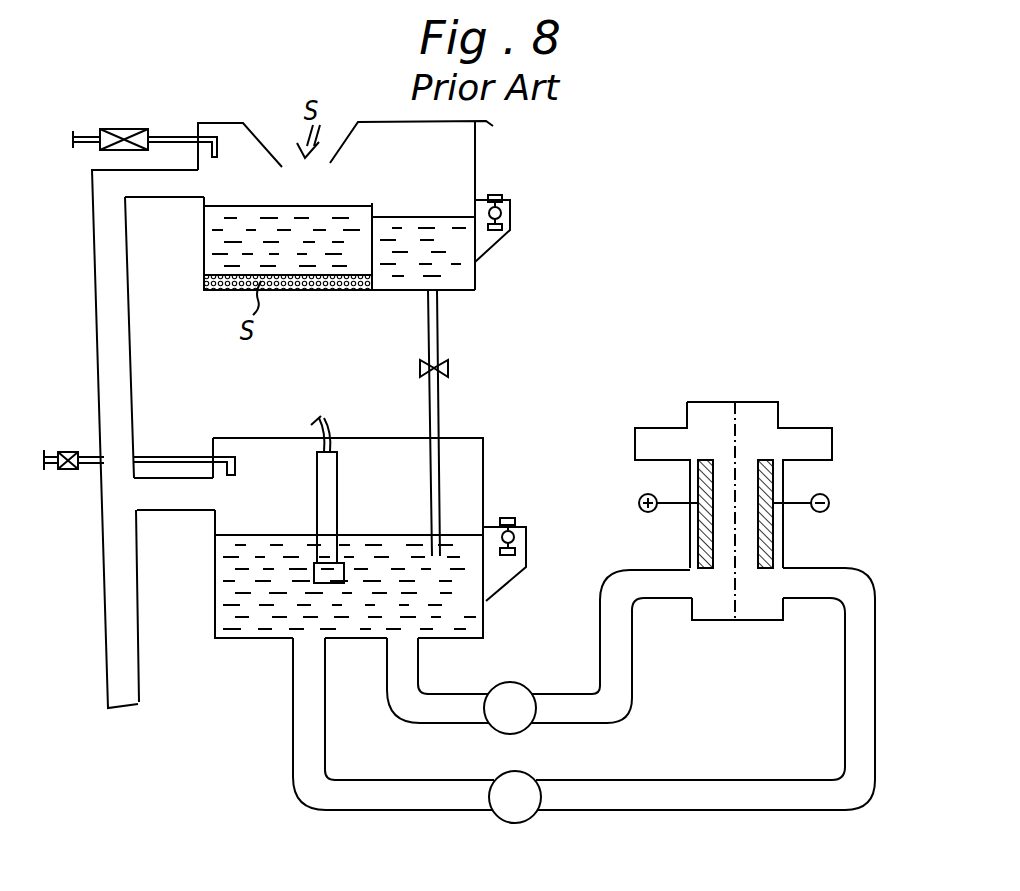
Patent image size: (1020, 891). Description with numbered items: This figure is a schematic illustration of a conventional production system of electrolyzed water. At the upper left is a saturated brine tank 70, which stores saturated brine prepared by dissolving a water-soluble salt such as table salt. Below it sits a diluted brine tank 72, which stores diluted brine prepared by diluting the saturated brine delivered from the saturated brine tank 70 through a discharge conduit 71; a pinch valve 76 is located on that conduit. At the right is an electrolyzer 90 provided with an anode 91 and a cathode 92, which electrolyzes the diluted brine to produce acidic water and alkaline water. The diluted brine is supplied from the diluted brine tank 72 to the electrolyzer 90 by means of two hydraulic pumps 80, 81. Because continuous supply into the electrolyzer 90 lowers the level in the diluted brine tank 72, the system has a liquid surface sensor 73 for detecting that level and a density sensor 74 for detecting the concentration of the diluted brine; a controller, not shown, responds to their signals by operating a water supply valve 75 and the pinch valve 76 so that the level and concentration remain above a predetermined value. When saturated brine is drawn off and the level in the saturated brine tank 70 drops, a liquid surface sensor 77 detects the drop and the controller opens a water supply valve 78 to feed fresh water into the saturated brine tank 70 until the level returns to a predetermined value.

The saturated brine tank 70 is at (488, 157).
The discharge conduit 71 is at (440, 325).
The diluted brine tank 72 is at (495, 455).
The liquid surface sensor 73 is at (521, 537).
The density sensor 74 is at (338, 496).
The water supply valve 75 is at (69, 450).
The pinch valve 76 is at (448, 368).
The liquid surface sensor 77 is at (503, 213).
The water supply valve 78 is at (130, 128).
The hydraulic pump 80 is at (523, 724).
The hydraulic pump 81 is at (528, 812).
The electrolyzer 90 is at (813, 413).
The anode 91 is at (703, 549).
The cathode 92 is at (768, 547).